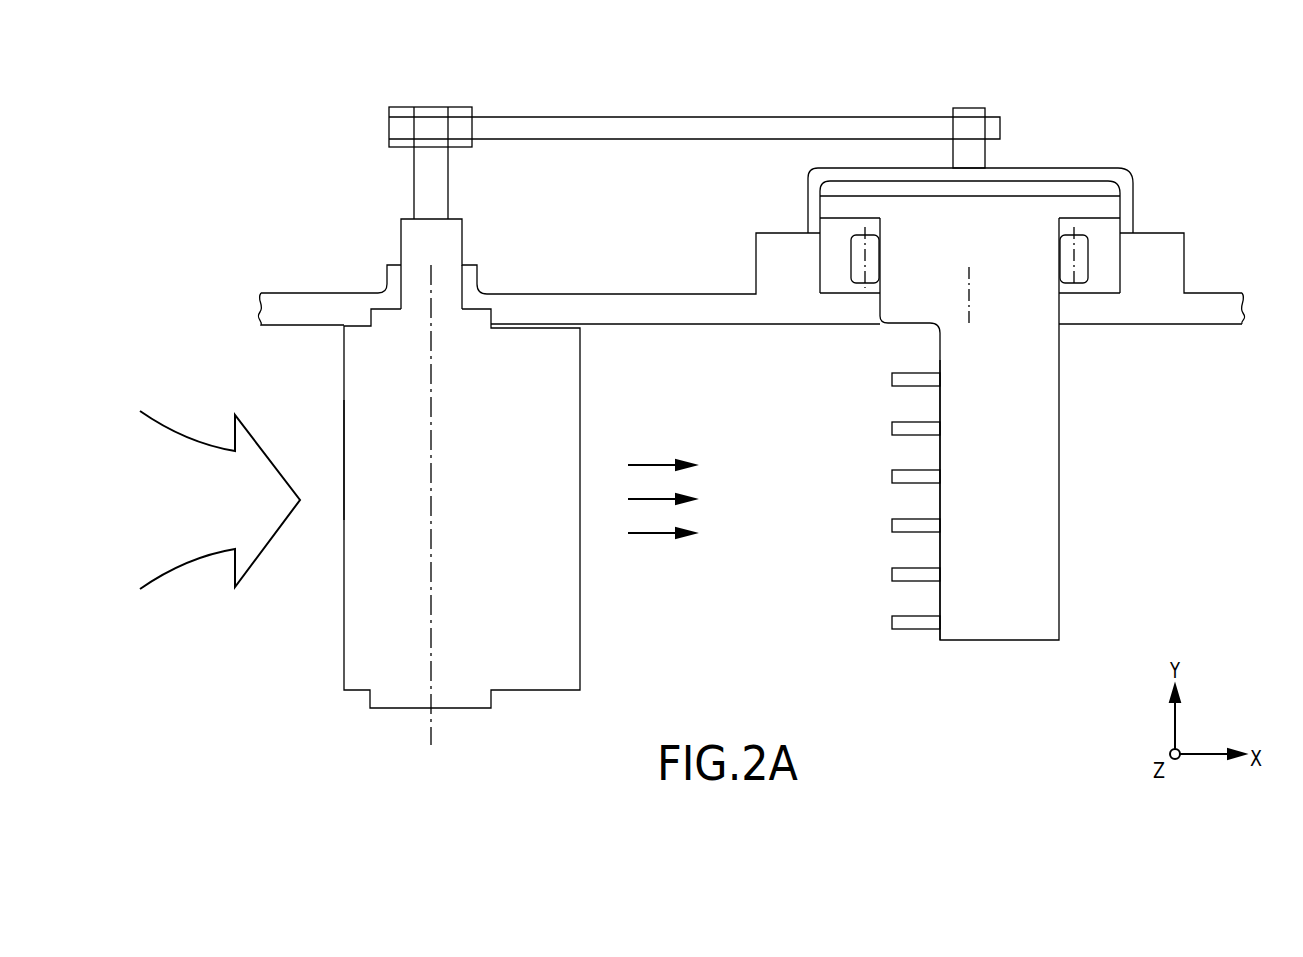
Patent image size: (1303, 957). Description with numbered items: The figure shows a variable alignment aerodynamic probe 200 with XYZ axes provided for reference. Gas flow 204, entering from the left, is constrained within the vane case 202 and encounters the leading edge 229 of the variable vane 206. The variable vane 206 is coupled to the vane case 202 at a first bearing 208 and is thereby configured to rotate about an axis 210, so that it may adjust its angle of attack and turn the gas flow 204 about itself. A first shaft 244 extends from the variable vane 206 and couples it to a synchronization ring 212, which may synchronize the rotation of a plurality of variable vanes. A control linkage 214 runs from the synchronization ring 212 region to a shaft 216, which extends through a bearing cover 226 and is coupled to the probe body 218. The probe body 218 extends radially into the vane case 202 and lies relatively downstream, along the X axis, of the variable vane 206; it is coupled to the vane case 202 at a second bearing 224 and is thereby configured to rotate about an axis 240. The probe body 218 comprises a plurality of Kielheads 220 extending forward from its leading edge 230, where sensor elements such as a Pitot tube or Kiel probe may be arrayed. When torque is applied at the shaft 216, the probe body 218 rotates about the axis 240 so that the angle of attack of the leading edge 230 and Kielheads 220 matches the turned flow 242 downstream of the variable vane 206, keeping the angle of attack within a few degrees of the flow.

The variable alignment aerodynamic probe 200 is at (268, 121).
The vane case 202 is at (303, 312).
The gas flow 204 is at (200, 543).
The variable vane 206 is at (500, 486).
The first bearing 208 is at (462, 265).
The axis 210 is at (431, 555).
The synchronization ring 212 is at (457, 85).
The control linkage 214 is at (610, 125).
The shaft 216 is at (975, 110).
The probe body 218 is at (1005, 437).
The Kielheads 220 is at (895, 478).
The second bearing 224 is at (1085, 283).
The bearing cover 226 is at (1128, 200).
The leading edge 229 is at (344, 458).
The leading edge 230 is at (940, 500).
The axis 240 is at (968, 305).
The turned flow 242 is at (652, 535).
The first shaft 244 is at (432, 173).